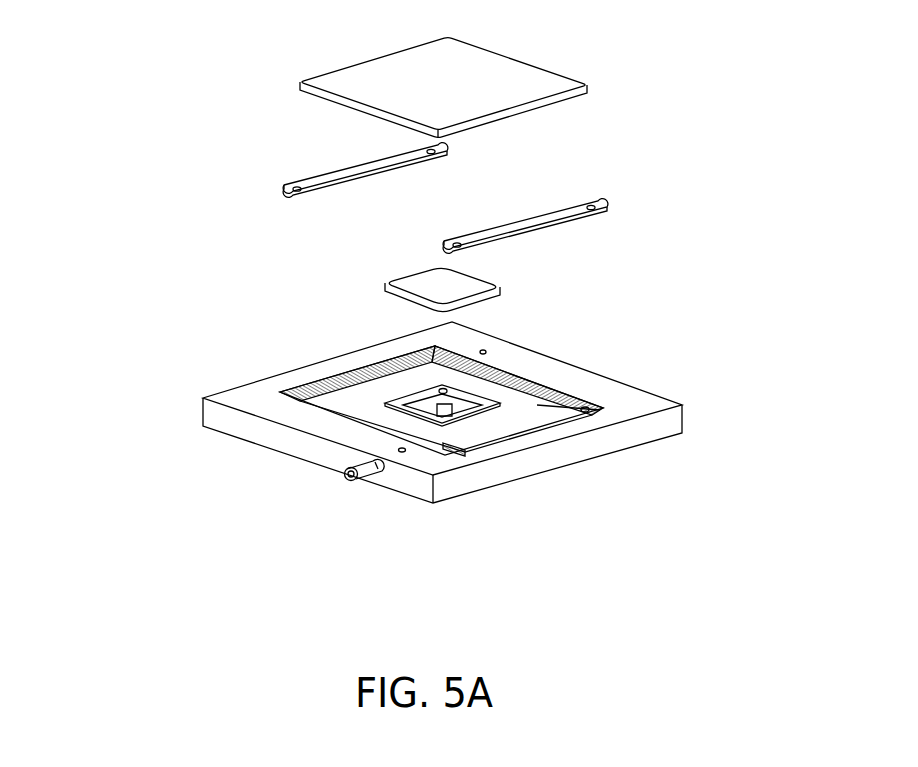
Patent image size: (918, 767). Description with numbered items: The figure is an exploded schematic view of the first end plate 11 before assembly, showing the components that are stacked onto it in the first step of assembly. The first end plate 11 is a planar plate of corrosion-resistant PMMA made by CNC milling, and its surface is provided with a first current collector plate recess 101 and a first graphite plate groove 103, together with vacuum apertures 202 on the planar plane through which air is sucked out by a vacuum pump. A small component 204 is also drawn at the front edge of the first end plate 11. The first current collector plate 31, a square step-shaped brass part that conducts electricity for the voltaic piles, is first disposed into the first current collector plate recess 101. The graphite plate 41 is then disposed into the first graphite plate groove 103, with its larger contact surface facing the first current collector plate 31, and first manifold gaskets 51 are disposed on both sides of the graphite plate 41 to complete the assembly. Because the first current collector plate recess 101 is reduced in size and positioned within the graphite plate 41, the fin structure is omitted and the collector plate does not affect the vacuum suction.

The graphite plate 41 is at (438, 77).
The first manifold gasket 51 is at (356, 166).
The first current collector plate 31 is at (448, 287).
The first end plate 11 is at (592, 383).
The first current collector plate recess 101 is at (443, 407).
The first graphite plate groove 103 is at (583, 411).
The vacuum aperture 202 is at (395, 450).
The pin 204 is at (372, 480).